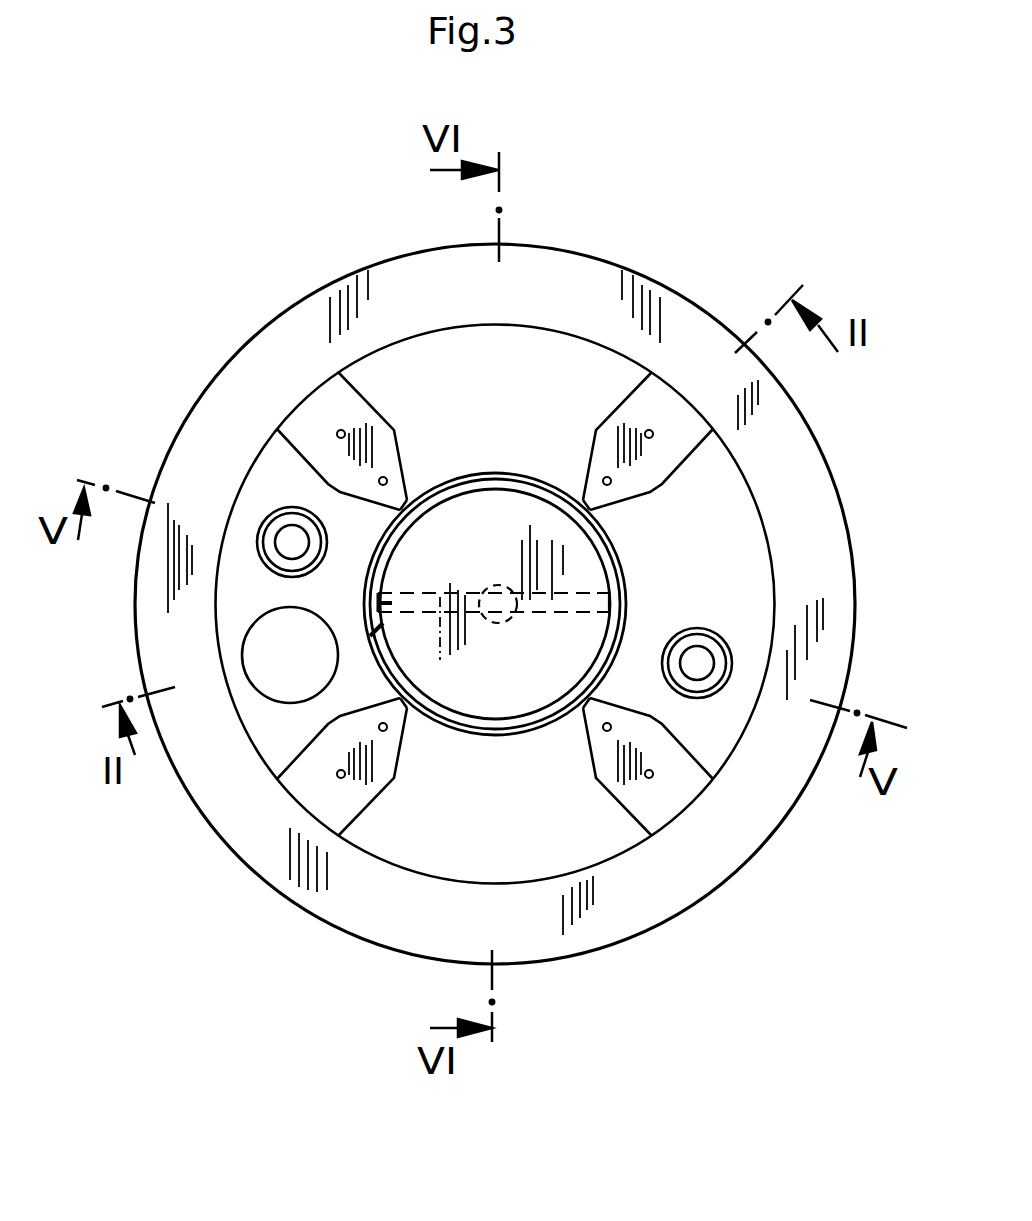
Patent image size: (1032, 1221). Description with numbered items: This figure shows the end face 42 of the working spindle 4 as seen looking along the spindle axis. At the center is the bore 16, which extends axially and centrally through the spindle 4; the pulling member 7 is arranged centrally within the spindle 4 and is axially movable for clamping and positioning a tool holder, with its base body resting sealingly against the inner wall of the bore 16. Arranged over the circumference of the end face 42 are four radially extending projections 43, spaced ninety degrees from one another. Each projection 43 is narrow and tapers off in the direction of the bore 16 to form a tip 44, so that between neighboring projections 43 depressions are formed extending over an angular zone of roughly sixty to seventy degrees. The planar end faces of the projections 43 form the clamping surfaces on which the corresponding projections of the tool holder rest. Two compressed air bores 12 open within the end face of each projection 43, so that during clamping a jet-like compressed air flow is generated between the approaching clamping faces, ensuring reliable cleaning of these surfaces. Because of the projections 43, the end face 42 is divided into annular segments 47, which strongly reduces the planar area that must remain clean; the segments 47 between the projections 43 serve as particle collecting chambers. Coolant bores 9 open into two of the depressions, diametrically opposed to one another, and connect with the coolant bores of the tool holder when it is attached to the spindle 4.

The working spindle 4 is at (545, 350).
The pulling member 7 is at (518, 515).
The coolant bores 9 is at (287, 552).
The compressed air bores 12 is at (612, 727).
The bore 16 is at (452, 507).
The end face 42 is at (718, 553).
The projections 43 is at (308, 430).
The tip 44 is at (380, 499).
The annular segments 47 is at (485, 348).